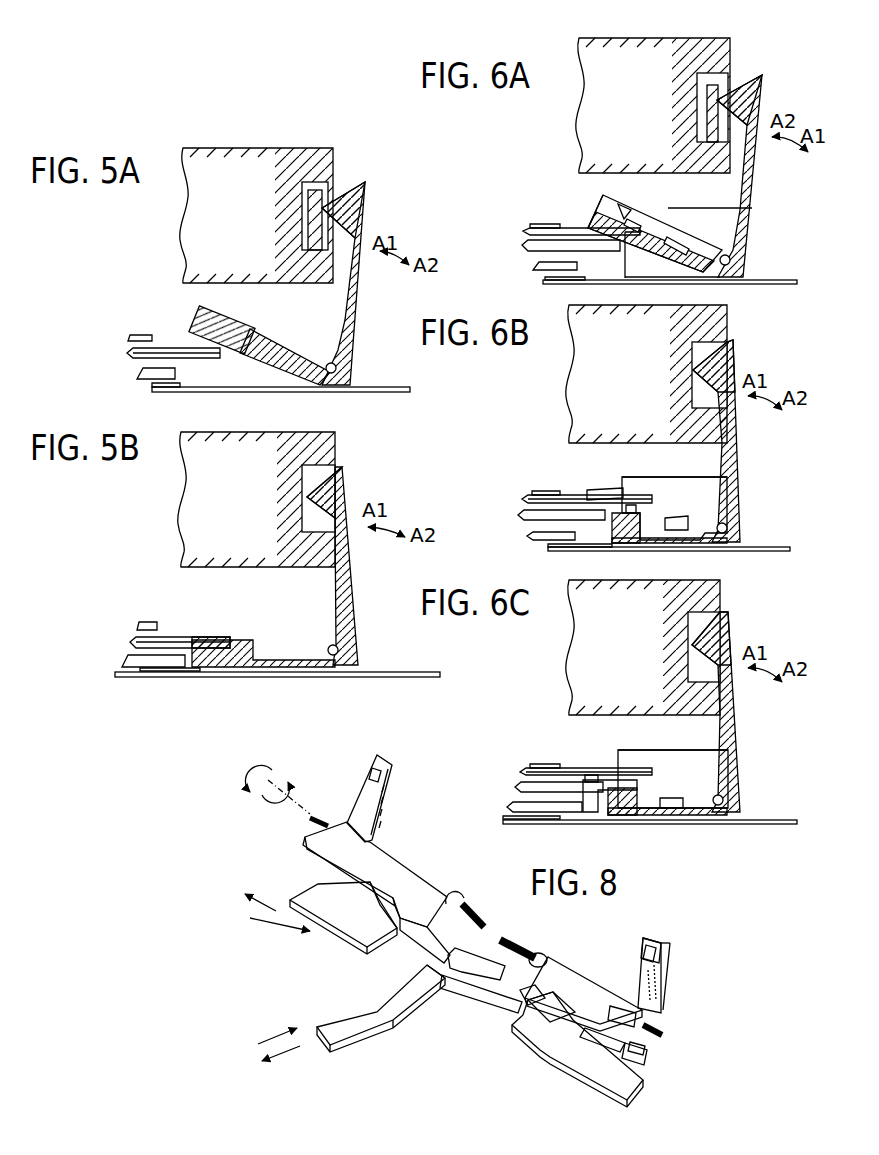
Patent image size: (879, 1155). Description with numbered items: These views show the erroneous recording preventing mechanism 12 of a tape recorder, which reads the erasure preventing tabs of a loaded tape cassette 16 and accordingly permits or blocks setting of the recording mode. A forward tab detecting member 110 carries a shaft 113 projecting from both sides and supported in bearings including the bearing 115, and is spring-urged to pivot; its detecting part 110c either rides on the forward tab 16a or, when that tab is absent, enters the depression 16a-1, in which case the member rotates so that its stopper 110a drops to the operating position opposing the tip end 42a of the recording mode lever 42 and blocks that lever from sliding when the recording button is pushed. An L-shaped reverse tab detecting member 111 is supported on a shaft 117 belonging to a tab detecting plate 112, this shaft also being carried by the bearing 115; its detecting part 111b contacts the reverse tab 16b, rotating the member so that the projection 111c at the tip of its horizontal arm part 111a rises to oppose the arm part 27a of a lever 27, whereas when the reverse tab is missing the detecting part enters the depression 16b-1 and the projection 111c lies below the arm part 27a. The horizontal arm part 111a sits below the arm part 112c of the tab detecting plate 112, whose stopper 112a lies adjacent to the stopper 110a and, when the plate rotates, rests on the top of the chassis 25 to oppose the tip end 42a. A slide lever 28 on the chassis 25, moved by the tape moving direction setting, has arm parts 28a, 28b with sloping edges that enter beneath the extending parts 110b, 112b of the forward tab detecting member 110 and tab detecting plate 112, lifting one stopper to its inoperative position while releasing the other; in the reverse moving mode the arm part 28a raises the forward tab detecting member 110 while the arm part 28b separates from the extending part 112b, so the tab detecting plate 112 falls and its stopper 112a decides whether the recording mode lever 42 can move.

In FIG. 8, the erroneous recording preventing mechanism 12 is at (438, 815).
In FIG. 5A, the tape cassette 16 is at (297, 148).
In FIG. 5B, the tape cassette 16 is at (317, 432).
In FIG. 6A, the tape cassette 16 is at (706, 38).
In FIG. 6B, the tape cassette 16 is at (727, 320).
In FIG. 6C, the tape cassette 16 is at (720, 598).
In FIG. 5A, the forward tab 16a is at (333, 180).
In FIG. 5B, the depression 16a-1 is at (302, 490).
In FIG. 6A, the reverse tab 16b is at (730, 65).
In FIG. 6B, the depression 16b-1 is at (692, 356).
In FIG. 6C, the depression 16b-1 is at (690, 630).
In FIG. 5A, the chassis 25 is at (389, 386).
In FIG. 5B, the chassis 25 is at (398, 672).
In FIG. 6A, the chassis 25 is at (766, 280).
In FIG. 6B, the chassis 25 is at (767, 547).
In FIG. 6C, the chassis 25 is at (767, 820).
In FIG. 5A, the lever 27 is at (138, 334).
In FIG. 5B, the lever 27 is at (146, 621).
In FIG. 6A, the lever 27 is at (534, 226).
In FIG. 6B, the lever 27 is at (536, 489).
In FIG. 6C, the lever 27 is at (530, 764).
In FIG. 6A, the arm part 27a is at (640, 220).
In FIG. 6B, the arm part 27a is at (628, 505).
In FIG. 6C, the arm part 27a is at (605, 775).
In FIG. 5A, the slide lever 28 is at (127, 349).
In FIG. 5B, the slide lever 28 is at (130, 638).
In FIG. 6A, the slide lever 28 is at (523, 233).
In FIG. 6B, the slide lever 28 is at (522, 511).
In FIG. 6C, the slide lever 28 is at (520, 784).
In FIG. 8, the slide lever 28 is at (332, 937).
In FIG. 5A, the arm part 28a is at (180, 348).
In FIG. 5B, the arm part 28a is at (208, 636).
In FIG. 8, the arm part 28a is at (380, 906).
In FIG. 6A, the arm part 28b is at (572, 240).
In FIG. 6B, the arm part 28b is at (572, 510).
In FIG. 6C, the arm part 28b is at (562, 782).
In FIG. 8, the arm part 28b is at (535, 1020).
In FIG. 5A, the recording mode lever 42 is at (143, 380).
In FIG. 5B, the recording mode lever 42 is at (151, 668).
In FIG. 6A, the recording mode lever 42 is at (535, 268).
In FIG. 6B, the recording mode lever 42 is at (527, 536).
In FIG. 6C, the recording mode lever 42 is at (507, 806).
In FIG. 8, the recording mode lever 42 is at (350, 1022).
In FIG. 5A, the tip end 42a is at (168, 387).
In FIG. 5B, the tip end 42a is at (178, 671).
In FIG. 6A, the tip end 42a is at (570, 281).
In FIG. 6B, the tip end 42a is at (566, 548).
In FIG. 6C, the tip end 42a is at (550, 820).
In FIG. 8, the tip end 42a is at (434, 983).
In FIG. 5A, the forward tab detecting member 110 is at (358, 296).
In FIG. 5B, the forward tab detecting member 110 is at (357, 562).
In FIG. 8, the forward tab detecting member 110 is at (403, 861).
In FIG. 5A, the stopper 110a is at (196, 310).
In FIG. 5B, the stopper 110a is at (188, 668).
In FIG. 8, the stopper 110a is at (478, 952).
In FIG. 8, the extending part 110b is at (405, 914).
In FIG. 5A, the detecting part 110c is at (362, 200).
In FIG. 5B, the detecting part 110c is at (340, 489).
In FIG. 8, the detecting part 110c is at (372, 765).
In FIG. 6A, the reverse tab detecting member 111 is at (753, 187).
In FIG. 6B, the reverse tab detecting member 111 is at (742, 444).
In FIG. 6C, the reverse tab detecting member 111 is at (740, 715).
In FIG. 8, the reverse tab detecting member 111 is at (665, 988).
In FIG. 6A, the horizontal arm part 111a is at (678, 290).
In FIG. 6B, the horizontal arm part 111a is at (660, 545).
In FIG. 6C, the horizontal arm part 111a is at (675, 816).
In FIG. 8, the horizontal arm part 111a is at (642, 1066).
In FIG. 6A, the detecting part 111b is at (755, 95).
In FIG. 6B, the detecting part 111b is at (735, 368).
In FIG. 6C, the detecting part 111b is at (728, 638).
In FIG. 8, the detecting part 111b is at (643, 952).
In FIG. 6A, the projection 111c is at (626, 231).
In FIG. 6B, the projection 111c is at (615, 544).
In FIG. 6C, the projection 111c is at (620, 815).
In FIG. 8, the projection 111c is at (586, 1050).
In FIG. 6A, the tab detecting plate 112 is at (666, 215).
In FIG. 6B, the tab detecting plate 112 is at (662, 477).
In FIG. 6C, the tab detecting plate 112 is at (662, 750).
In FIG. 8, the tab detecting plate 112 is at (573, 972).
In FIG. 6A, the stopper 112a is at (598, 212).
In FIG. 6B, the stopper 112a is at (545, 545).
In FIG. 6C, the stopper 112a is at (590, 812).
In FIG. 8, the stopper 112a is at (470, 1010).
In FIG. 6A, the extending part 112b is at (616, 208).
In FIG. 6B, the extending part 112b is at (598, 490).
In FIG. 8, the extending part 112b is at (532, 993).
In FIG. 6A, the arm part 112c is at (690, 246).
In FIG. 6B, the arm part 112c is at (690, 502).
In FIG. 6C, the arm part 112c is at (675, 798).
In FIG. 8, the arm part 112c is at (648, 1050).
In FIG. 5A, the shaft 113 is at (327, 361).
In FIG. 5B, the shaft 113 is at (328, 645).
In FIG. 8, the shaft 113 is at (470, 913).
In FIG. 6A, the bearing 115 is at (722, 208).
In FIG. 6B, the bearing 115 is at (642, 477).
In FIG. 6C, the bearing 115 is at (641, 750).
In FIG. 6A, the shaft 117 is at (730, 257).
In FIG. 6B, the shaft 117 is at (728, 525).
In FIG. 6C, the shaft 117 is at (725, 797).
In FIG. 8, the shaft 117 is at (514, 942).